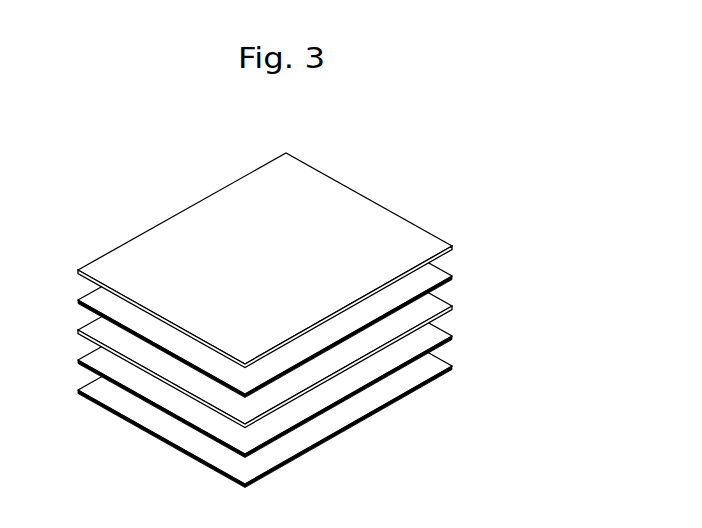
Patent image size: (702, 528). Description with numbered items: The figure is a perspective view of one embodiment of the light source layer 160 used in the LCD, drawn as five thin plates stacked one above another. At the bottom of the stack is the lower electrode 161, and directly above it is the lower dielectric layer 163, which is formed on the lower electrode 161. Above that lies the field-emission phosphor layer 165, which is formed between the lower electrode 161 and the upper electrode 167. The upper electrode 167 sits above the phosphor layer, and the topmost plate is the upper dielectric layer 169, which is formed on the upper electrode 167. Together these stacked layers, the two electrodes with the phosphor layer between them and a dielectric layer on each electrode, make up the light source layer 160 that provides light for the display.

The light source layer 160 is at (147, 182).
The lower electrode 161 is at (454, 369).
The lower dielectric layer 163 is at (454, 339).
The field-emission phosphor layer 165 is at (454, 309).
The upper electrode 167 is at (454, 279).
The upper dielectric layer 169 is at (454, 249).